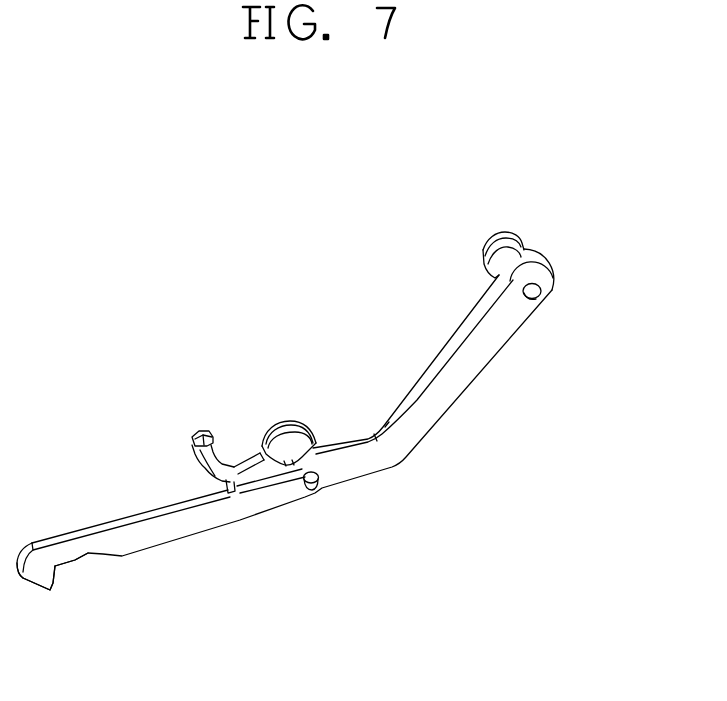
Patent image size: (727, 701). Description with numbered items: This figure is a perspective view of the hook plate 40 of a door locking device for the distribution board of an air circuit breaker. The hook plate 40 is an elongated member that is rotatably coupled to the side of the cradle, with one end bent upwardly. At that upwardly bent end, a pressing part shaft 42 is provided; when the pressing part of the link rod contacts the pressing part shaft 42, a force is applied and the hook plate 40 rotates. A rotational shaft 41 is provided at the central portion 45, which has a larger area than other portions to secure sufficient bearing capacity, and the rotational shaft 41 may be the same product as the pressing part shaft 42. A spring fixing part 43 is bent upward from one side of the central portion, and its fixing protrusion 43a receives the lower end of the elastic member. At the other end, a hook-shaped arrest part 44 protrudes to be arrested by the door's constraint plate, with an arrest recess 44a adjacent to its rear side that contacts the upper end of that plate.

The hook plate 40 is at (140, 378).
The rotational shaft 41 is at (278, 426).
The pressing part shaft 42 is at (482, 253).
The spring fixing part 43 is at (191, 446).
The fixing protrusion 43a is at (201, 430).
The arrest part 44 is at (45, 583).
The arrest recess 44a is at (72, 560).
The central portion 45 is at (308, 494).